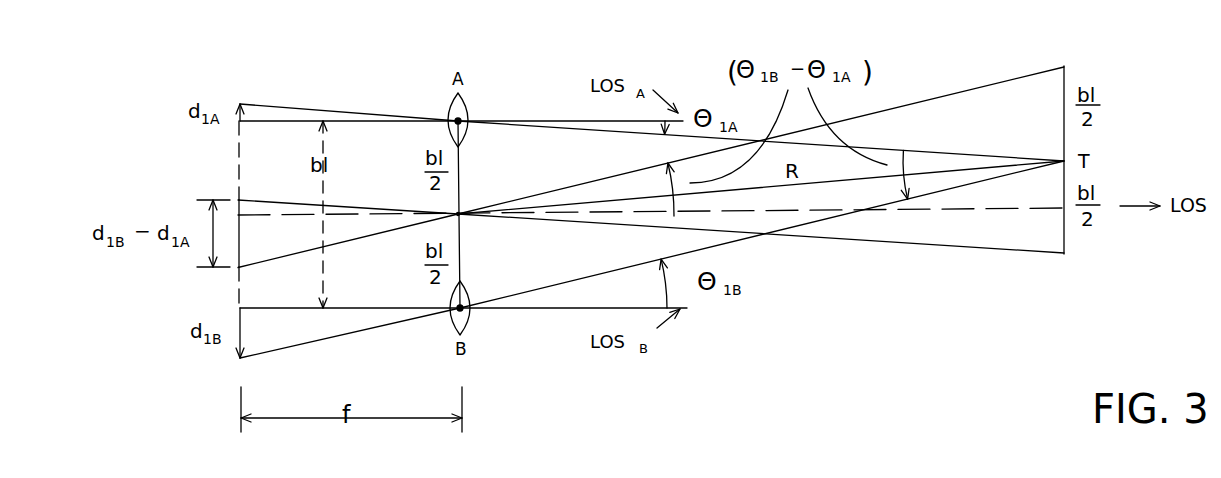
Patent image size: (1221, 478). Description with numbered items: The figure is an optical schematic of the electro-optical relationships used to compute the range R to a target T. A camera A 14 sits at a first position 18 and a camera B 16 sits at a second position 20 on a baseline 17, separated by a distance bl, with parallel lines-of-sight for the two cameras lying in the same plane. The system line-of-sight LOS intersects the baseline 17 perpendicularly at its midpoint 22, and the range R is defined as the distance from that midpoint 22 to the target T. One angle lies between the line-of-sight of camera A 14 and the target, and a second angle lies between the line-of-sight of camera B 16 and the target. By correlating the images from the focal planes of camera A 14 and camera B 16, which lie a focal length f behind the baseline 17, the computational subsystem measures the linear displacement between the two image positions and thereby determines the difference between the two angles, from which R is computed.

The camera A 14 is at (463, 104).
The camera B 16 is at (469, 318).
The baseline 17 is at (459, 173).
The first position 18 is at (463, 123).
The second position 20 is at (463, 298).
The baseline midpoint 22 is at (460, 217).